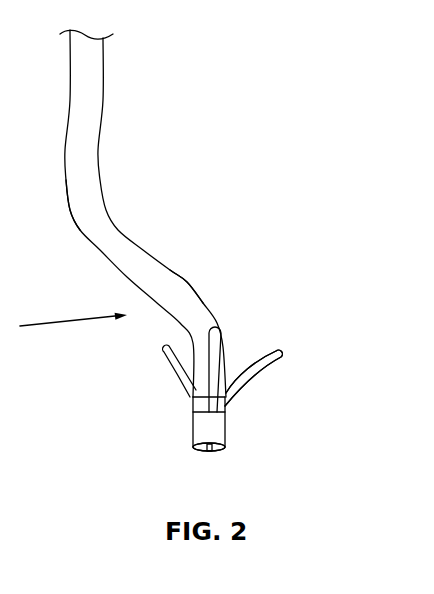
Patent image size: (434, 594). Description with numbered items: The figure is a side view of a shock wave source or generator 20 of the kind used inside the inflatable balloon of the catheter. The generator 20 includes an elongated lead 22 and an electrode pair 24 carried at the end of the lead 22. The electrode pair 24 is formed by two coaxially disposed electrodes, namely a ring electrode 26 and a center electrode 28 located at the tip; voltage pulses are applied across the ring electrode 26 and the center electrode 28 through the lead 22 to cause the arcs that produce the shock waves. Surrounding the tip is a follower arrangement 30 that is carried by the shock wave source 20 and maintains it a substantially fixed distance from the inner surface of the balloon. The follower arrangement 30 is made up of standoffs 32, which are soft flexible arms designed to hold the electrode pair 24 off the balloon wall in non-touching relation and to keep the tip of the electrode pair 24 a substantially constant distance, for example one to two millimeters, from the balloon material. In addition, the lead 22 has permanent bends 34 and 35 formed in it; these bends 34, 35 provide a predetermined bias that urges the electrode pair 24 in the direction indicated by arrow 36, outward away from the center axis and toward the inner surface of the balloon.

The shock wave source 20 is at (206, 42).
The elongated lead 22 is at (103, 107).
The electrode pair 24 is at (198, 458).
The ring electrode 26 is at (220, 431).
The center electrode 28 is at (210, 451).
The follower arrangement 30 is at (246, 348).
The standoffs 32 is at (253, 373).
The bend 34 is at (73, 217).
The bend 35 is at (187, 282).
The arrow 36 is at (60, 312).